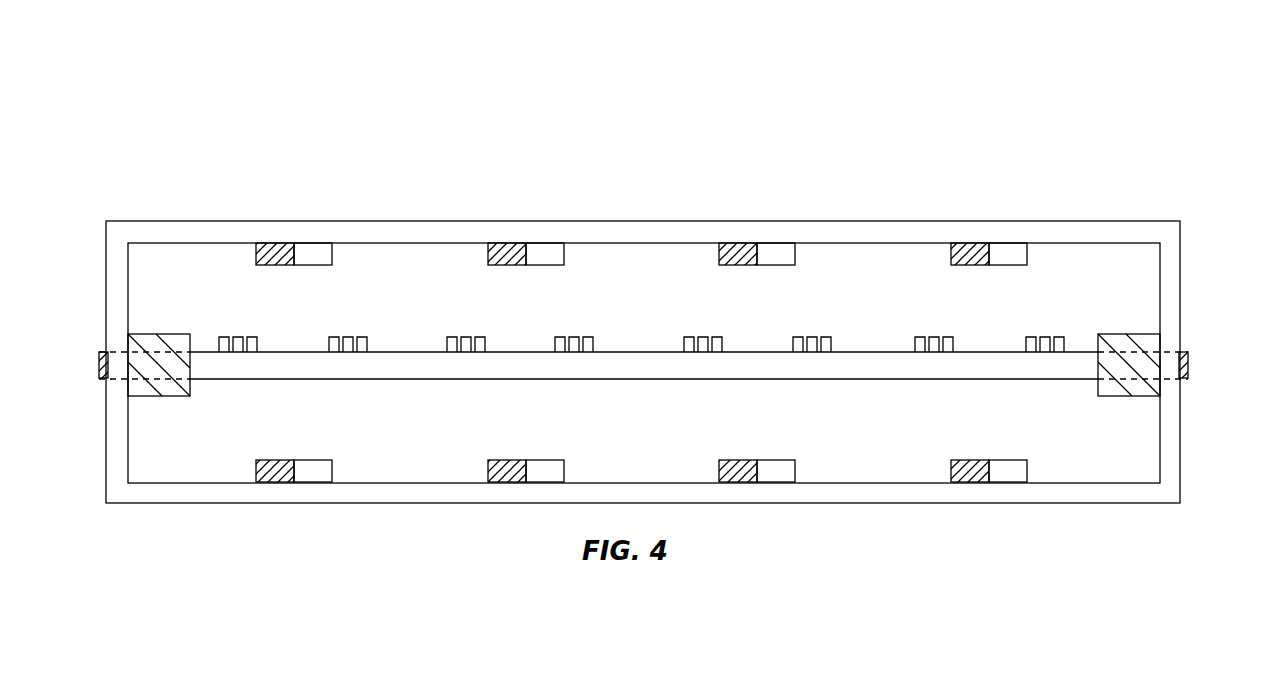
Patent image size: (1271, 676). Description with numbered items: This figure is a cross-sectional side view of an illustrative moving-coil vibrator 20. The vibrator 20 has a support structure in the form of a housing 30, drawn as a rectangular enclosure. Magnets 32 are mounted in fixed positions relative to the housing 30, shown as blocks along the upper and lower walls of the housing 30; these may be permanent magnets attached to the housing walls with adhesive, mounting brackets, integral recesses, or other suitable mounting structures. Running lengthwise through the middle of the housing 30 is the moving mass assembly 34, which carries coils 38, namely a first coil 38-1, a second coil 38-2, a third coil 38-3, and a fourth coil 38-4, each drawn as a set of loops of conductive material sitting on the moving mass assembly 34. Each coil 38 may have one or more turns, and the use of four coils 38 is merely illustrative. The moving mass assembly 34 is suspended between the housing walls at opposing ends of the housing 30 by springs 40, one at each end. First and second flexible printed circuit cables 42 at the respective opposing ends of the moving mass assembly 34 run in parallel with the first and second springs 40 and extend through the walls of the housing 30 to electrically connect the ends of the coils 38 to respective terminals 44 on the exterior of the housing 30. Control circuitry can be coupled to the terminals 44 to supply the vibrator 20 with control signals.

The vibrator 20 is at (356, 123).
The housing 30 is at (903, 228).
The magnets 32 is at (473, 265).
The moving mass assembly 34 is at (633, 397).
The coils 38 is at (615, 307).
The first coil 38-1 is at (215, 331).
The second coil 38-2 is at (440, 331).
The third coil 38-3 is at (680, 331).
The fourth coil 38-4 is at (912, 331).
The springs 40 is at (161, 397).
The flexible printed circuit cables 42 is at (644, 371).
The terminals 44 is at (98, 365).